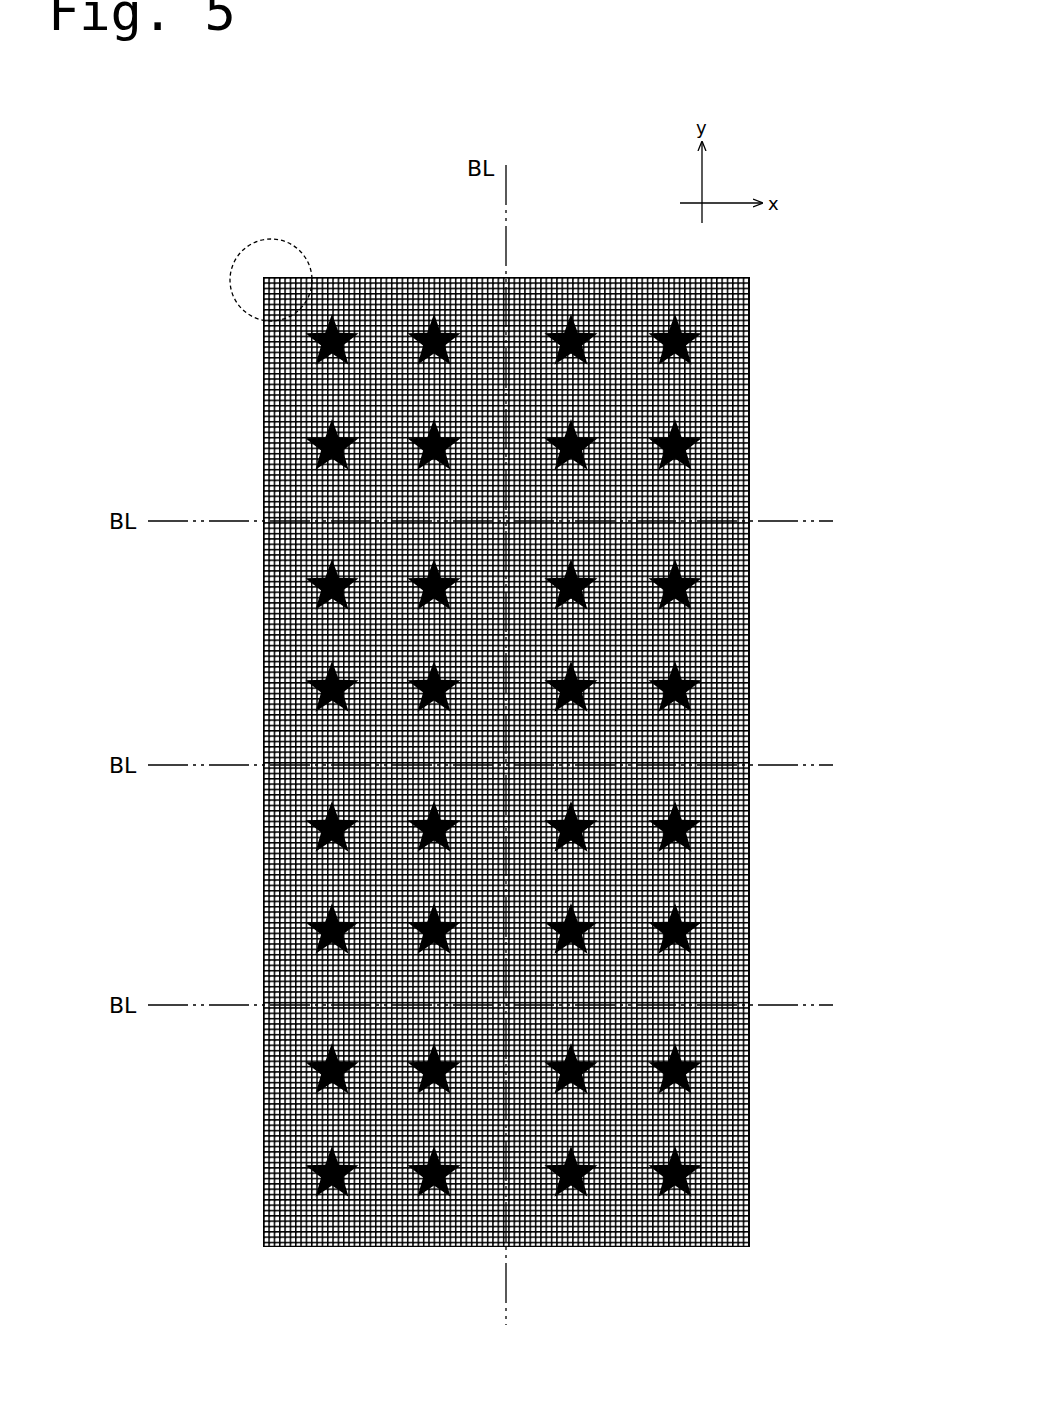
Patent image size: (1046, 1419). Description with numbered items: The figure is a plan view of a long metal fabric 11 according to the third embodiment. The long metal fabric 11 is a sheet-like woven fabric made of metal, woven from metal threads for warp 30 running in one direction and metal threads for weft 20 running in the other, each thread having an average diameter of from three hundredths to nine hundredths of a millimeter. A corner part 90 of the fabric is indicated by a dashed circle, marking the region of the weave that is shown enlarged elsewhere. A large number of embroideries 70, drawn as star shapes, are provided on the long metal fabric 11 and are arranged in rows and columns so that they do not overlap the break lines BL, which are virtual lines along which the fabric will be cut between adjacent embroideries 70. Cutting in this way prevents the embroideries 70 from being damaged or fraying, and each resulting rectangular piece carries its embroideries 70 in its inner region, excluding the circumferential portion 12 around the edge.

The long metal fabric 11 is at (563, 252).
The circumferential portion 12 is at (752, 400).
The metal threads for weft 20 is at (388, 1248).
The metal threads for warp 30 is at (263, 720).
The embroideries 70 is at (310, 925).
The corner part 90 is at (290, 247).